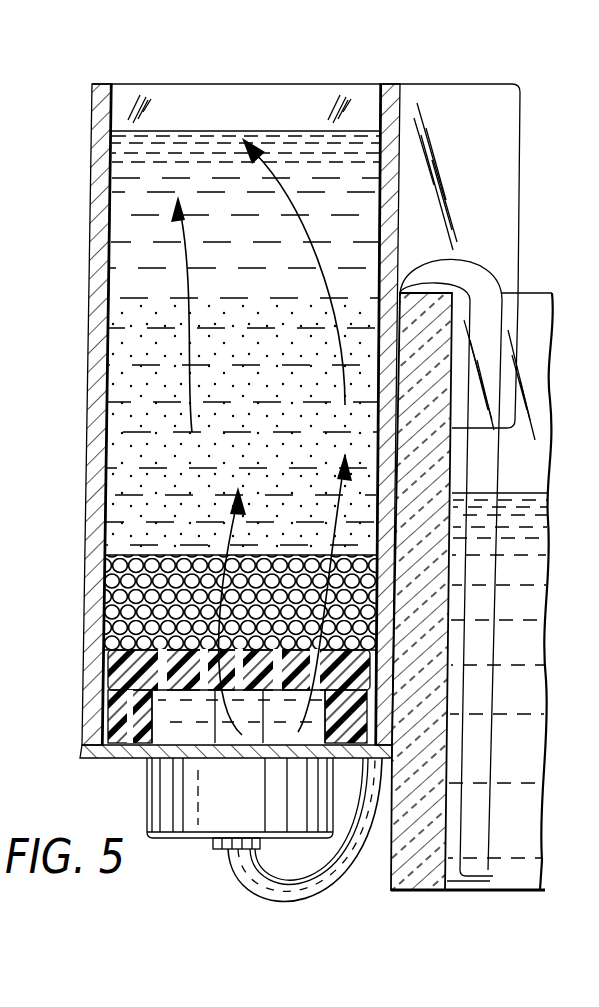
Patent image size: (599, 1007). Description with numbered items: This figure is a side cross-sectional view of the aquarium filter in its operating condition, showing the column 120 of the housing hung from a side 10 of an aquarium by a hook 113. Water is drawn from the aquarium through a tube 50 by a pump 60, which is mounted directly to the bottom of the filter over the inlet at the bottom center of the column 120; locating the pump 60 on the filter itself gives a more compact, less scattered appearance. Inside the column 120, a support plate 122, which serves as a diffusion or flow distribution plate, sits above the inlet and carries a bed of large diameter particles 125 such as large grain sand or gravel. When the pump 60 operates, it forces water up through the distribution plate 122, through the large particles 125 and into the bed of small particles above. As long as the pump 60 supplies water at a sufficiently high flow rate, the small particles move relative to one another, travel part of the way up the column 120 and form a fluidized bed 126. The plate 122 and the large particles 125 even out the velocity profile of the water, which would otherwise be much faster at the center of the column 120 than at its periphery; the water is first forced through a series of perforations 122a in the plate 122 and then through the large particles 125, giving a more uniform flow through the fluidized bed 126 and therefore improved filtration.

The side of aquarium 10 is at (492, 871).
The tube 50 is at (338, 870).
The pump 60 is at (193, 843).
The hook 113 is at (512, 355).
The column 120 is at (208, 422).
The support plate (flow distribution plate) 122 is at (125, 728).
The perforations 122a is at (118, 700).
The large particles (large grain sand or gravel) 125 is at (100, 621).
The fluidized bed 126 is at (89, 385).